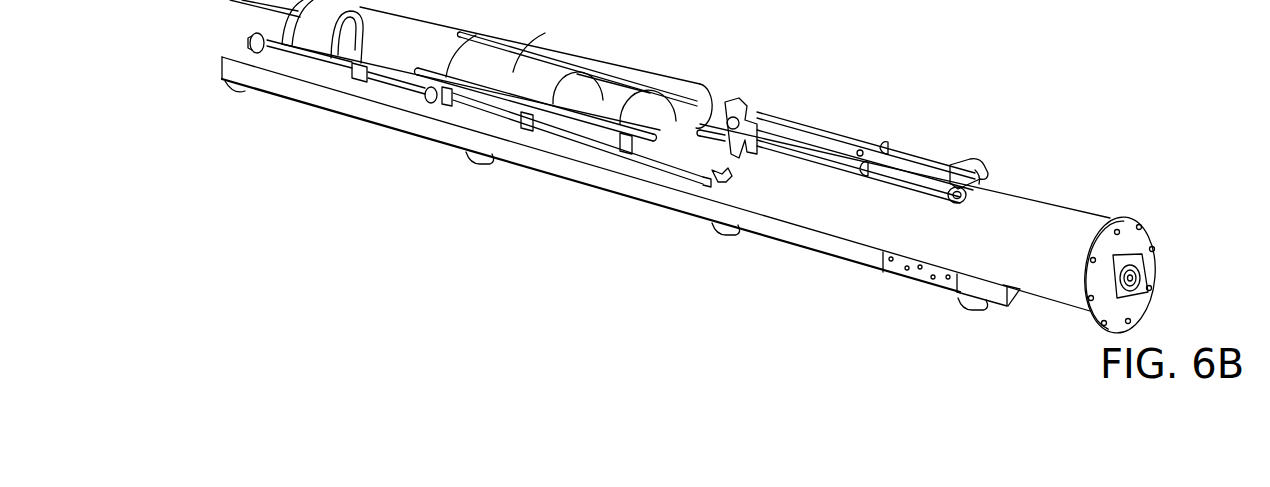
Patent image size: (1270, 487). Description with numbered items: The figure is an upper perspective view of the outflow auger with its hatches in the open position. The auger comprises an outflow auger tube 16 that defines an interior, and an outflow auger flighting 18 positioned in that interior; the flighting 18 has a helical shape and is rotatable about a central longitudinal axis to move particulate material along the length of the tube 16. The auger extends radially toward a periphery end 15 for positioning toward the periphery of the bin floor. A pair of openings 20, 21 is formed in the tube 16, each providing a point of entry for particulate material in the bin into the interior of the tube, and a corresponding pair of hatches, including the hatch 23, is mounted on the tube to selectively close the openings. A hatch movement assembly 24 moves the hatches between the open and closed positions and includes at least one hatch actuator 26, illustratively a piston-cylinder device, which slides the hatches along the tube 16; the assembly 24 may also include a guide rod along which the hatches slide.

The periphery end 15 is at (1052, 320).
The outflow auger tube 16 is at (510, 70).
The outflow auger flighting 18 is at (332, 47).
The opening 20 is at (427, 33).
The opening 21 is at (607, 87).
The hatch 23 is at (687, 117).
The hatch movement assembly 24 is at (1022, 177).
The hatch actuator 26 is at (803, 120).